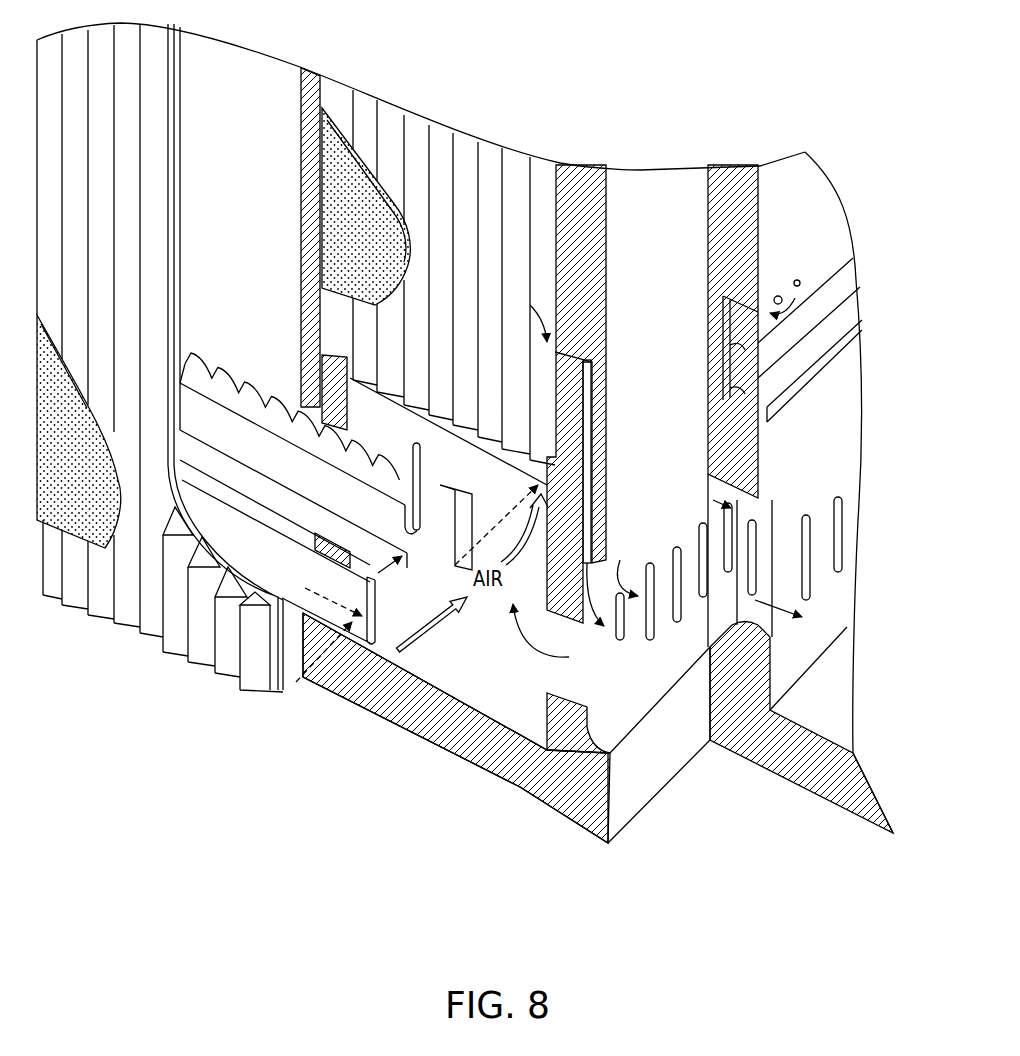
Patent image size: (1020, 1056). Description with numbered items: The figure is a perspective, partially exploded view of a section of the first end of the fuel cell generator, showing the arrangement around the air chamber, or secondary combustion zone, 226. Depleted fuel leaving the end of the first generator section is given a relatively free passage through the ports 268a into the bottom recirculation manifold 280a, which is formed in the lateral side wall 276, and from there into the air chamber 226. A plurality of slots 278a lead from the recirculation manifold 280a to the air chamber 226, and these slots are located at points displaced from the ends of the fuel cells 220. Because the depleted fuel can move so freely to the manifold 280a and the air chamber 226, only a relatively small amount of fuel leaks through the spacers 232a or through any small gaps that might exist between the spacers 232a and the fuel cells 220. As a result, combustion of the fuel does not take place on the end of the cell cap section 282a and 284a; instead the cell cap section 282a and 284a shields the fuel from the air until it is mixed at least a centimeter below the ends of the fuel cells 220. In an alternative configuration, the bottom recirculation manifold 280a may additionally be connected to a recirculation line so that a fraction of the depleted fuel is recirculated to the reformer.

The fuel cells 220 is at (518, 222).
The air chamber/secondary combustion zone 226 is at (453, 683).
The spacers 232a is at (190, 384).
The ports 268a is at (727, 343).
The lateral side wall 276 is at (617, 803).
The slots 278a is at (705, 530).
The bottom recirculation manifold 280a is at (677, 673).
The cell cap section 282a is at (262, 384).
The cell cap section 284a is at (304, 575).